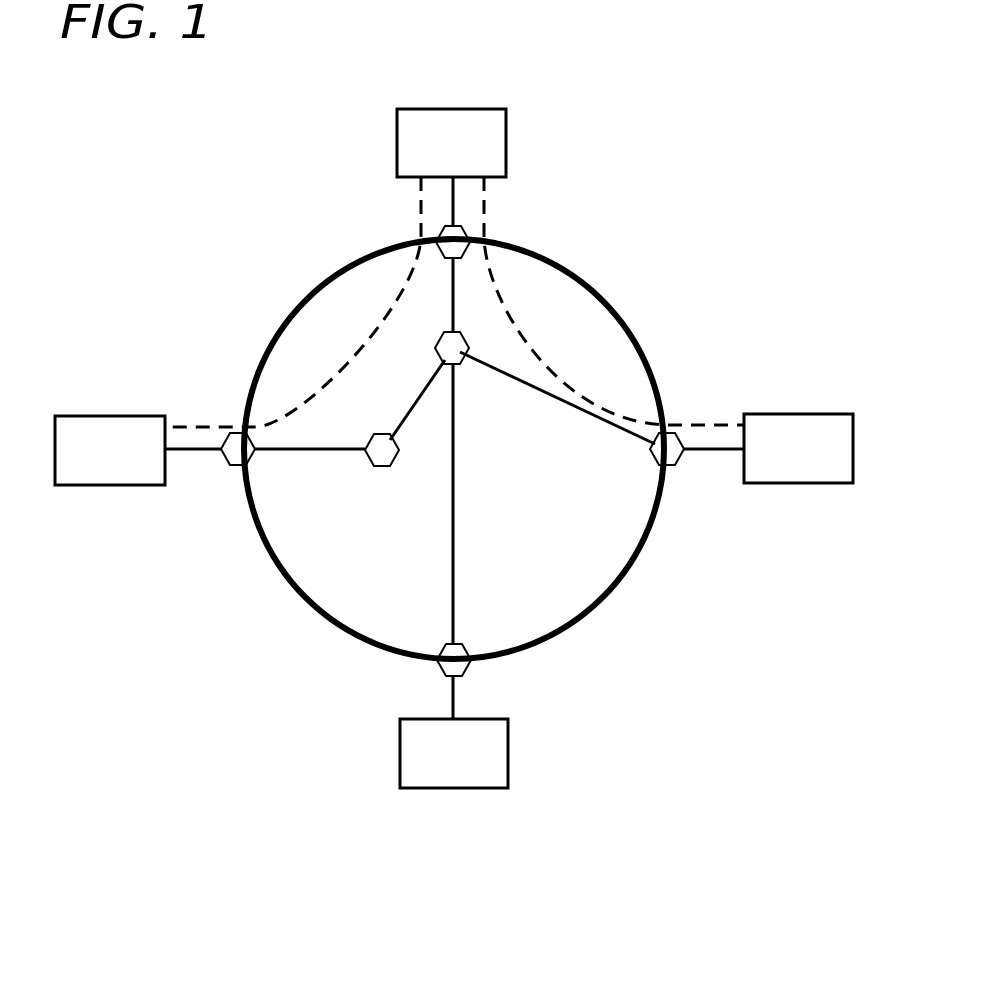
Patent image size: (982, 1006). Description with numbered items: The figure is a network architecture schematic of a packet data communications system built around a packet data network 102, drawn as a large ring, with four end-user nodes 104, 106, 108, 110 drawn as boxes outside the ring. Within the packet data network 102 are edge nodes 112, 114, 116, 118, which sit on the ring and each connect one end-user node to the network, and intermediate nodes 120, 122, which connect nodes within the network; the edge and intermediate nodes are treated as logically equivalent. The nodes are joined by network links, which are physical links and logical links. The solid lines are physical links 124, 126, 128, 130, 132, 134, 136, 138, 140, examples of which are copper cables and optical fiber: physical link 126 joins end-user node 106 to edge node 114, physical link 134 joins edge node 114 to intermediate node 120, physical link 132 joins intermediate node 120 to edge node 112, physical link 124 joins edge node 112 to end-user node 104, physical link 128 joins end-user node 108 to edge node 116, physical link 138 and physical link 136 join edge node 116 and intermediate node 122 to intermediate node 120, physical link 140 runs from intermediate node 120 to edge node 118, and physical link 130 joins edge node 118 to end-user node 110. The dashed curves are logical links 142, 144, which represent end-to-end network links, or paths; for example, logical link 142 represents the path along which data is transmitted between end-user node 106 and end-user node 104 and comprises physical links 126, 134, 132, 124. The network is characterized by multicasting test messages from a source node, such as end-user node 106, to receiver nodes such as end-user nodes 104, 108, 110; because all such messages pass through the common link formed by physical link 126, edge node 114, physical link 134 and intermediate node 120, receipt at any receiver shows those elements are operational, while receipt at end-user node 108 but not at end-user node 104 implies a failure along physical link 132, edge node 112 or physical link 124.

The packet data network 102 is at (618, 590).
The end-user node 104 is at (802, 413).
The end-user node 106 is at (452, 108).
The end-user node 108 is at (112, 415).
The end-user node 110 is at (452, 792).
The edge node 112 is at (650, 456).
The edge node 114 is at (467, 224).
The edge node 116 is at (232, 432).
The edge node 118 is at (442, 643).
The intermediate node 120 is at (437, 340).
The intermediate node 122 is at (383, 470).
The physical link 124 is at (715, 453).
The physical link 126 is at (453, 198).
The physical link 128 is at (195, 453).
The physical link 130 is at (455, 692).
The physical link 132 is at (550, 397).
The physical link 134 is at (457, 298).
The physical link 136 is at (415, 403).
The physical link 138 is at (314, 453).
The physical link 140 is at (455, 530).
The logical link 142 is at (542, 340).
The logical link 144 is at (343, 365).